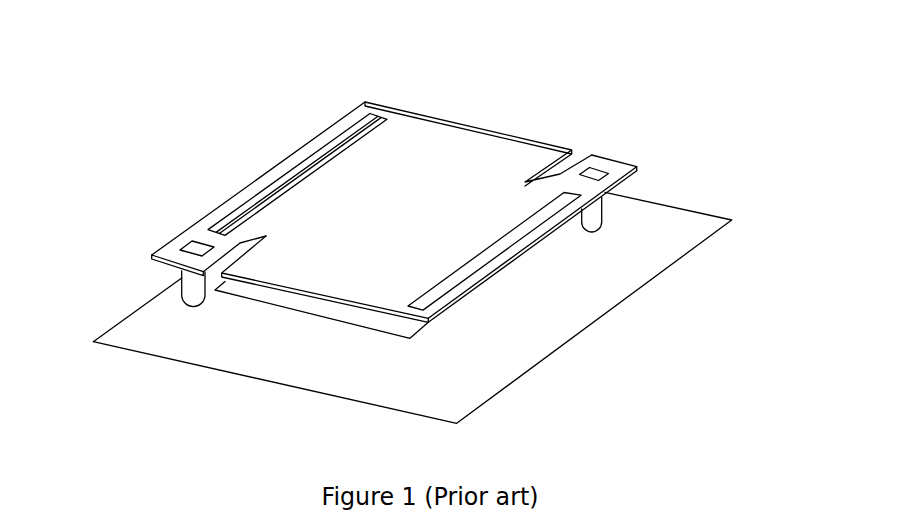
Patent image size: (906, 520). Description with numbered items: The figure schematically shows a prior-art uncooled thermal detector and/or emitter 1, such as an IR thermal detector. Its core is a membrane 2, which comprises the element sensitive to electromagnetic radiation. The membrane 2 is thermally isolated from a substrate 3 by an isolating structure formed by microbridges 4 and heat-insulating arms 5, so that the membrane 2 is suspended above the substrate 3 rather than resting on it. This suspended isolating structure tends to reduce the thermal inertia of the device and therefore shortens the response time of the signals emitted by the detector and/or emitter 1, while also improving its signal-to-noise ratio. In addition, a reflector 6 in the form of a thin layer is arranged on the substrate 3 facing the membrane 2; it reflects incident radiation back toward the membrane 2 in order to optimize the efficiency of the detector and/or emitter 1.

The uncooled thermal detector and/or emitter 1 is at (584, 99).
The membrane 2 is at (473, 142).
The substrate 3 is at (607, 283).
The microbridge 4 is at (602, 218).
The heat-insulating arm 5 is at (283, 161).
The reflector 6 is at (365, 320).